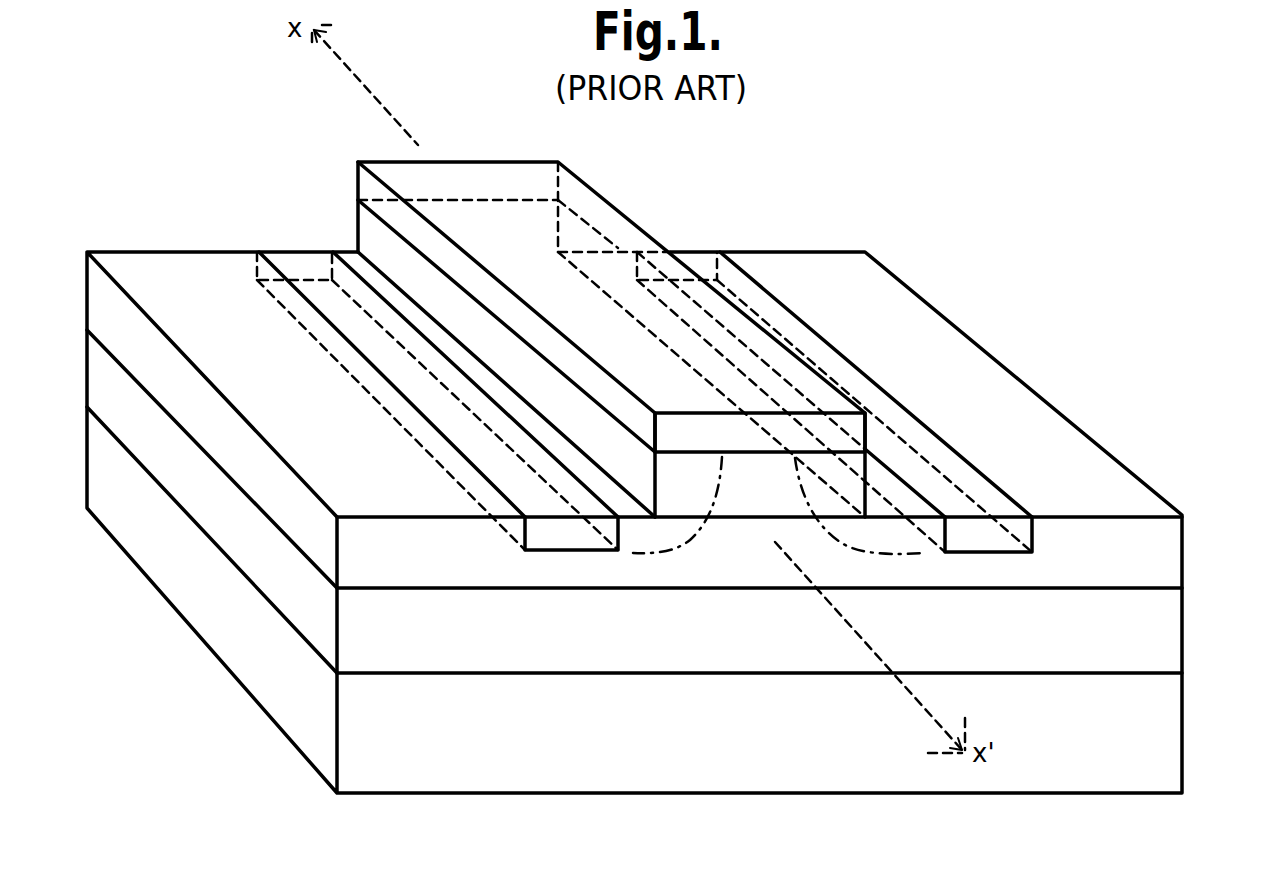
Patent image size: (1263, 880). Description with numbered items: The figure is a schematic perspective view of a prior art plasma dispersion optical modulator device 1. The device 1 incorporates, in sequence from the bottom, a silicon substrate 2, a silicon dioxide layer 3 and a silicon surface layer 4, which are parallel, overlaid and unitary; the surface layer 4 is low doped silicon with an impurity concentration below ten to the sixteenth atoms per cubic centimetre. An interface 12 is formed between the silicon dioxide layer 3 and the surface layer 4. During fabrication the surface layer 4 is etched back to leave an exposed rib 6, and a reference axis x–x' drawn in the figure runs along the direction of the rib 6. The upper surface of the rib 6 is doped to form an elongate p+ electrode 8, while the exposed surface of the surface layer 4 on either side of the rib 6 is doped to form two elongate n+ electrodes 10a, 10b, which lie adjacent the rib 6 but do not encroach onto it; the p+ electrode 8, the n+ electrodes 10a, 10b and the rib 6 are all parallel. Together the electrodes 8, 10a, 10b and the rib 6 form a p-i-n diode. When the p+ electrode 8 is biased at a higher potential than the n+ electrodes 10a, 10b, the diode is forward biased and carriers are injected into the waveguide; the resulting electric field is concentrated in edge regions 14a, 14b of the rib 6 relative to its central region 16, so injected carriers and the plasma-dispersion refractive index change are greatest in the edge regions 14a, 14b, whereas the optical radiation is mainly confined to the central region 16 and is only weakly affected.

The plasma dispersion optical modulator device 1 is at (953, 290).
The silicon substrate 2 is at (480, 760).
The silicon dioxide layer 3 is at (1145, 642).
The silicon surface layer 4 is at (1158, 547).
The rib 6 is at (380, 242).
The p+ electrode 8 is at (747, 437).
The n+ electrode 10a is at (950, 497).
The n+ electrode 10b is at (313, 293).
The interface 12 is at (1185, 587).
The edge region 14a is at (682, 520).
The edge region 14b is at (843, 522).
The central region 16 is at (760, 540).